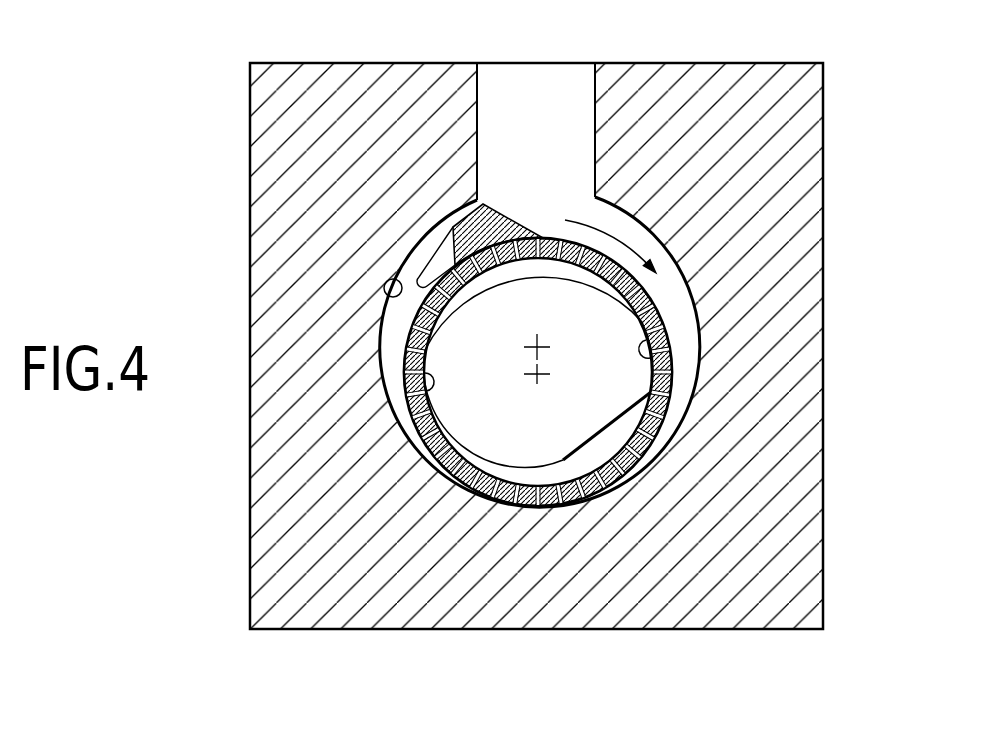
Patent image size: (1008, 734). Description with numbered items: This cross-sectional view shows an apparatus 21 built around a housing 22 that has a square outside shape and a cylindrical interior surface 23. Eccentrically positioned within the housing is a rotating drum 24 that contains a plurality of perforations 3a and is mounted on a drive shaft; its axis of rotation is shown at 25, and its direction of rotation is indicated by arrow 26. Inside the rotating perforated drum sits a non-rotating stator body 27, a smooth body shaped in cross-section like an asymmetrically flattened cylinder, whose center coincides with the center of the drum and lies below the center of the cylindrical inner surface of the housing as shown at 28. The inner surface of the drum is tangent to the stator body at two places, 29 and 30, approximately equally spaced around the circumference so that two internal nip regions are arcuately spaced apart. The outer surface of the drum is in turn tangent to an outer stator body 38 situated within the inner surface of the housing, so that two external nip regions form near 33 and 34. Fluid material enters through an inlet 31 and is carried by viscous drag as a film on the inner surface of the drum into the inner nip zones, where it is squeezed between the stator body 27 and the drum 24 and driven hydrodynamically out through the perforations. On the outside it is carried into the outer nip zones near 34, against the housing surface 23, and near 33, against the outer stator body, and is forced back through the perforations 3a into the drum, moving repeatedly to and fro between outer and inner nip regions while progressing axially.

The rotary apparatus 21 is at (214, 58).
The housing block 22 is at (826, 445).
The bore recess 23 is at (390, 290).
The sleeve ring 24 is at (660, 292).
The rotor axis 25 is at (535, 376).
The annular chamber 26 is at (607, 230).
The rotor body 27 is at (510, 472).
The bore axis 28 is at (537, 349).
The right notch 29 is at (660, 352).
The left notch 30 is at (403, 378).
The inlet channel 31 is at (503, 88).
The sleeve outer surface 33 is at (548, 236).
The sleeve segment divider 34 is at (555, 507).
The sleeve segment 3a is at (517, 505).
The seal wedge 38 is at (442, 228).